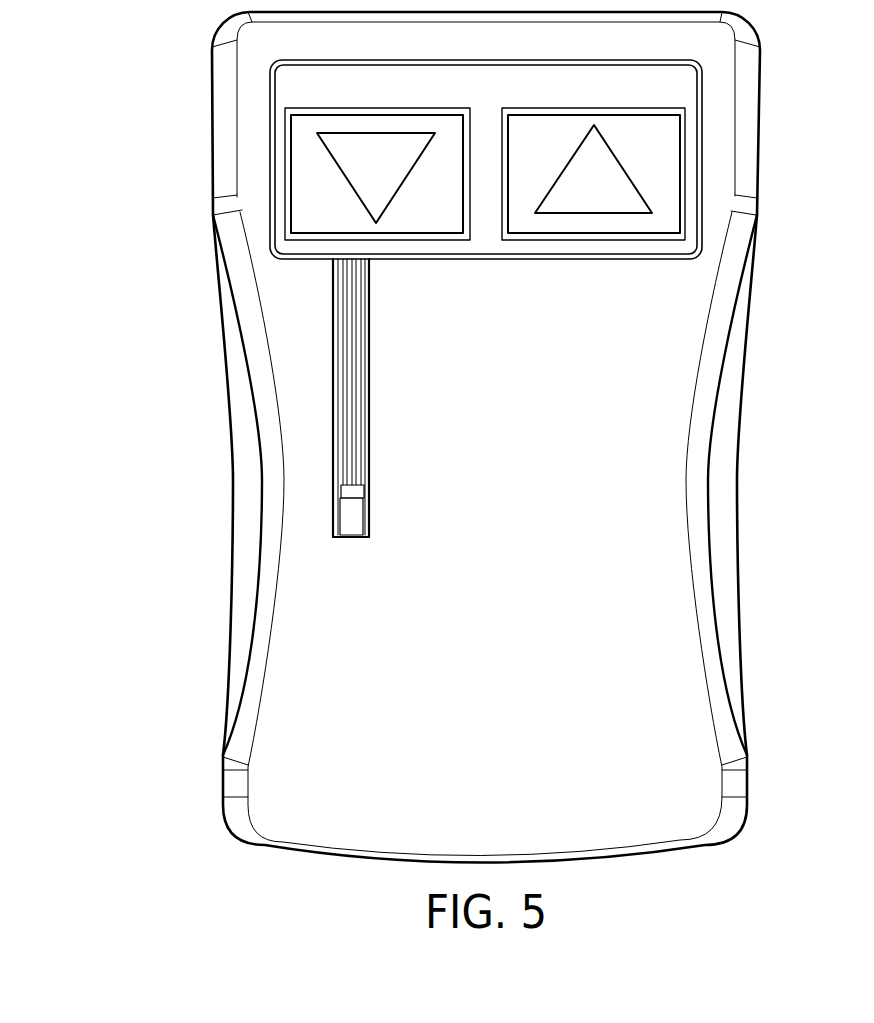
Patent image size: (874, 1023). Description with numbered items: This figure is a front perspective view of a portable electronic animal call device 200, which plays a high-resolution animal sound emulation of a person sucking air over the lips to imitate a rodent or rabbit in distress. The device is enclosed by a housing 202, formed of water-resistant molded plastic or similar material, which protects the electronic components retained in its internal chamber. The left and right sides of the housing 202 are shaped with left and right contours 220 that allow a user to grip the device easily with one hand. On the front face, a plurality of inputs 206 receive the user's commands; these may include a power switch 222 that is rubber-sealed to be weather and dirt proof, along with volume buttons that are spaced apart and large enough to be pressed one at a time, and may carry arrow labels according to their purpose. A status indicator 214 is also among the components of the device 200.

The portable electronic animal call device 200 is at (430, 437).
The housing 202 is at (216, 148).
The plurality of inputs 206 is at (185, 218).
The status indicator 214 is at (251, 414).
The left and right contours 220 is at (262, 478).
The power switch 222 is at (350, 522).